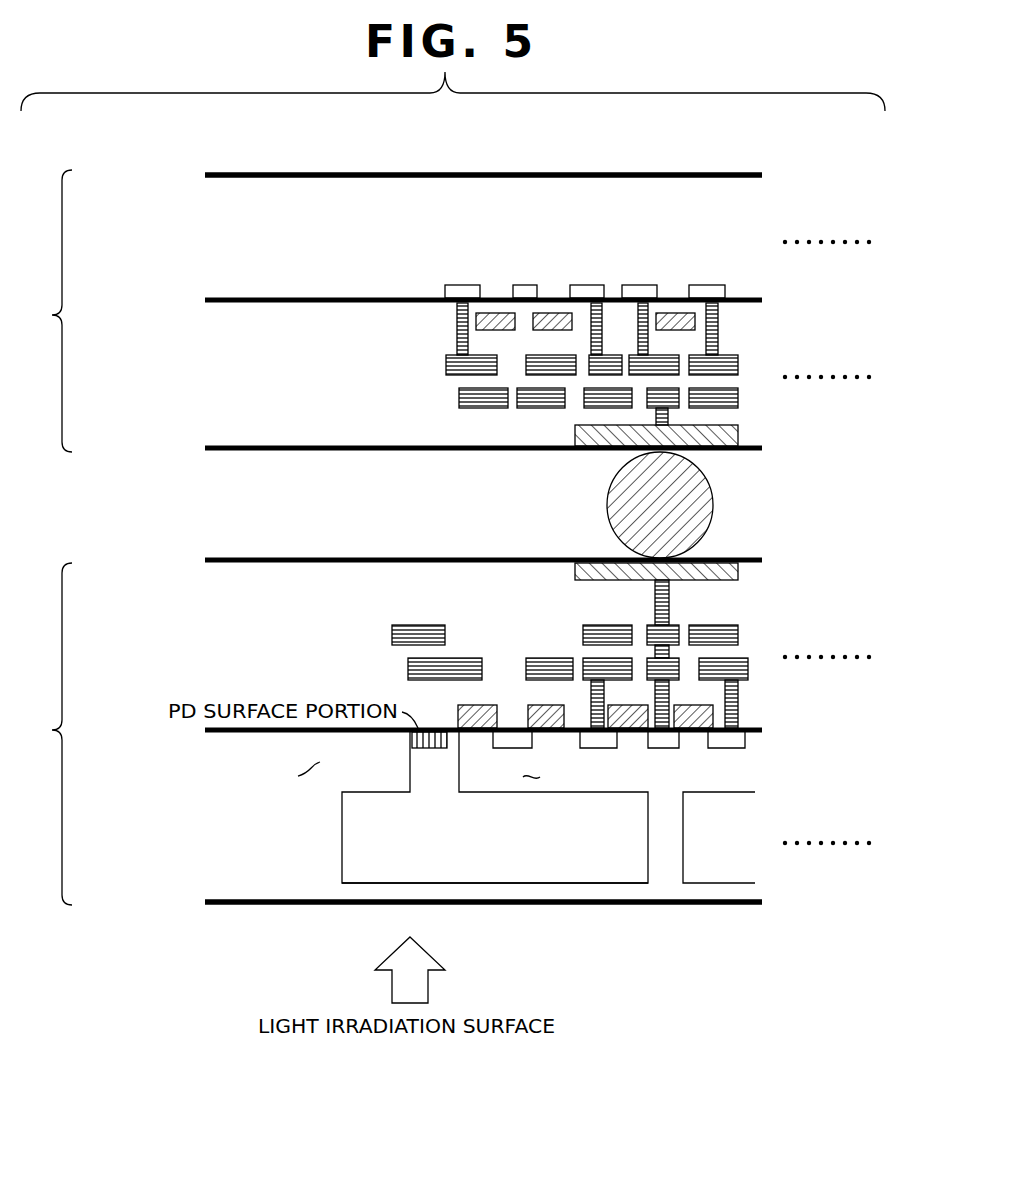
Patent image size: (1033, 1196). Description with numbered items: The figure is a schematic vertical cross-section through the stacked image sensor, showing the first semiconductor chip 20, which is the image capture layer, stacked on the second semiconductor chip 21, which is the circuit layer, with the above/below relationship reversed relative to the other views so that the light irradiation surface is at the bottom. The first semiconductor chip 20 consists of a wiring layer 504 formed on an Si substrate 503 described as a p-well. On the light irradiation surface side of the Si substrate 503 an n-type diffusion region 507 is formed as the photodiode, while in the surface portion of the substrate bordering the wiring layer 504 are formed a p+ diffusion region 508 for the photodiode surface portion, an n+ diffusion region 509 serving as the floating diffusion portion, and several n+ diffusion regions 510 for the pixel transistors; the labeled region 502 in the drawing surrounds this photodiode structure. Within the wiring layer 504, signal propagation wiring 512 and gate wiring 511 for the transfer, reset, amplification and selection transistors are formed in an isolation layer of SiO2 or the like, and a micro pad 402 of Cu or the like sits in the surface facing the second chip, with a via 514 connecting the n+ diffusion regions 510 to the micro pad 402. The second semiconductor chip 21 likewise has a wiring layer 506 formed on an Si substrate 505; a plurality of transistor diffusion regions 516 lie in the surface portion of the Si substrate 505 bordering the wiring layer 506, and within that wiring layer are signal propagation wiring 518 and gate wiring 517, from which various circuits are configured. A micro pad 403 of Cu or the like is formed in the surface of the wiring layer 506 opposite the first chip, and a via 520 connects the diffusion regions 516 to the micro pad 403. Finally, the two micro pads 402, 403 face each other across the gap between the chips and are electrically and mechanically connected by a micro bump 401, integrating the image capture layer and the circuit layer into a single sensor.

The first semiconductor chip 20 is at (44, 734).
The second semiconductor chip 21 is at (44, 311).
The micro bump 401 is at (707, 492).
The micro pad 402 is at (738, 568).
The micro pad 403 is at (738, 430).
The pixel 502 is at (640, 892).
The Si substrate 503 is at (170, 843).
The wiring layer 504 is at (170, 651).
The Si substrate 505 is at (170, 243).
The wiring layer 506 is at (170, 369).
The n-type diffusion region 507 is at (510, 876).
The p+ diffusion region 508 is at (410, 742).
The n+ diffusion region 509 is at (512, 748).
The n+ diffusion regions 510 is at (665, 742).
The gate wiring 511 is at (712, 715).
The signal propagation wiring 512 is at (440, 624).
The via 514 is at (669, 602).
The diffusion regions 516 is at (707, 285).
The gate wiring 517 is at (718, 318).
The signal propagation wiring 518 is at (458, 400).
The via 520 is at (456, 328).